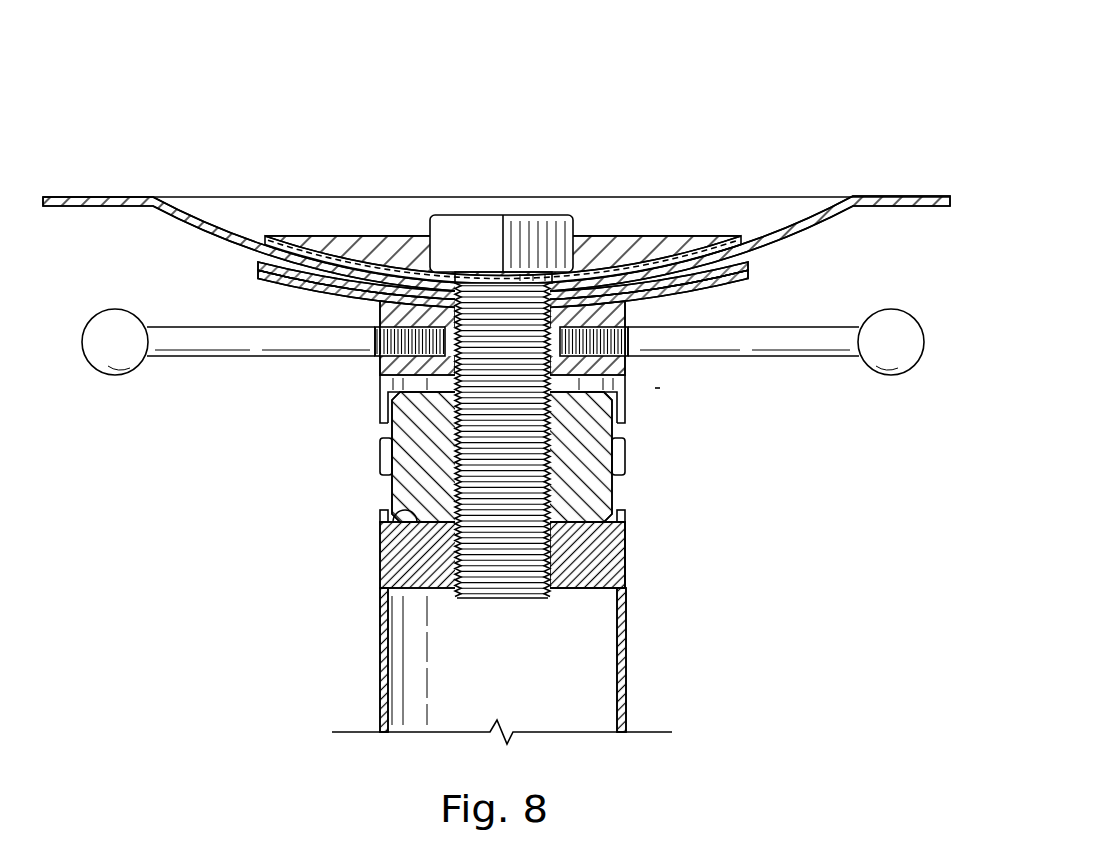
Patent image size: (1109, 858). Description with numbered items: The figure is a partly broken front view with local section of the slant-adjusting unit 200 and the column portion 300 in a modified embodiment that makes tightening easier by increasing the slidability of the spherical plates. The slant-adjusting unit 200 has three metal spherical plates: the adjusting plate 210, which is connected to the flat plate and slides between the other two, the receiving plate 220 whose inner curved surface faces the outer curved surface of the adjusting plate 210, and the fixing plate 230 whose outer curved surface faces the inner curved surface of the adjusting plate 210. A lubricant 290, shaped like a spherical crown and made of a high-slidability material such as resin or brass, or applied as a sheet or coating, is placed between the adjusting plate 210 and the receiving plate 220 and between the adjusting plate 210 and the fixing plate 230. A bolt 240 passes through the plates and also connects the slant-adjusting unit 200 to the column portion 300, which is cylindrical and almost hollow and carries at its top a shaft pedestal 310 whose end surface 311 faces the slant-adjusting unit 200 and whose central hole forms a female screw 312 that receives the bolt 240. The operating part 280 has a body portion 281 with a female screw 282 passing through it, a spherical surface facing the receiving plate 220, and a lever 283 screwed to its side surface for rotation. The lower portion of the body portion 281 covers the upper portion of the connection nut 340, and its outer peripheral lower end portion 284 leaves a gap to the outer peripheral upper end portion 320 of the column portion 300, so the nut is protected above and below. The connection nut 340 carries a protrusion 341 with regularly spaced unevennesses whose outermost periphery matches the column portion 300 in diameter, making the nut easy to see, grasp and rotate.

The slant-adjusting unit 200 is at (716, 106).
The adjusting plate 210 is at (838, 206).
The receiving plate 220 is at (745, 262).
The fixing plate 230 is at (348, 248).
The bolt 240 is at (540, 225).
The operating part 280 is at (668, 394).
The body portion 281 is at (390, 362).
The female screw 282 is at (620, 318).
The lever 283 is at (200, 358).
The outer peripheral lower end portion 284 is at (385, 430).
The lubricant 290 is at (300, 242).
The column portion 300 is at (646, 688).
The shaft pedestal 310 is at (397, 556).
The end surface 311 is at (388, 502).
The female screw 312 is at (600, 567).
The outer peripheral upper end portion 320 is at (627, 500).
The connection nut 340 is at (600, 457).
The protrusion 341 is at (377, 458).